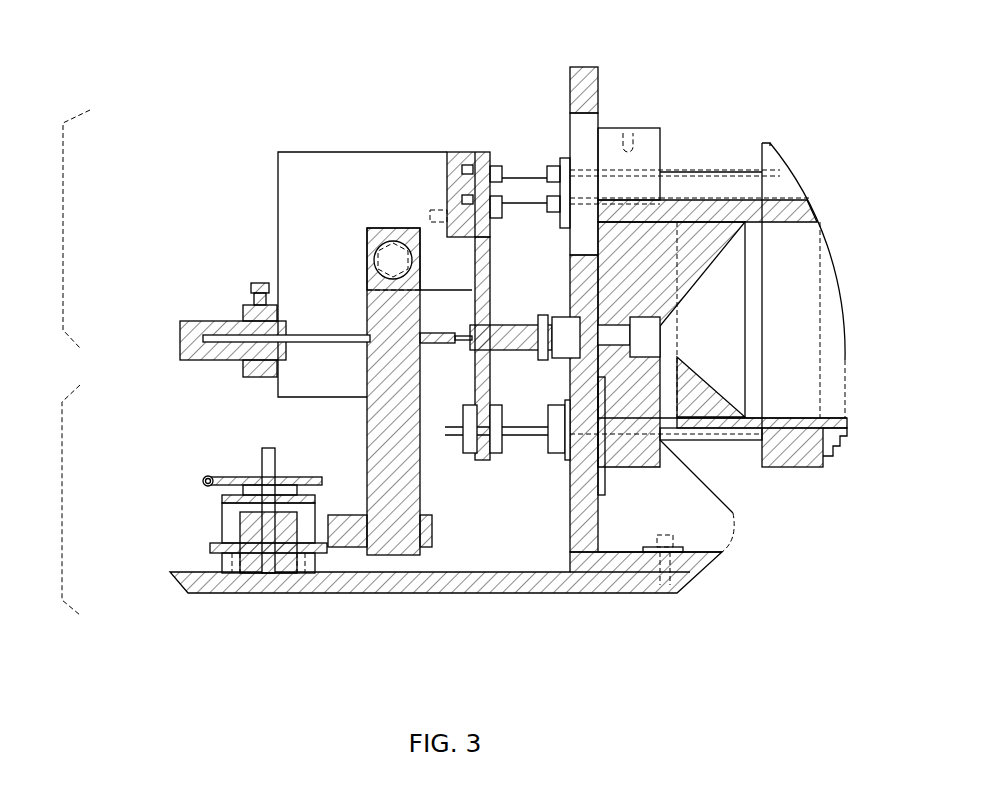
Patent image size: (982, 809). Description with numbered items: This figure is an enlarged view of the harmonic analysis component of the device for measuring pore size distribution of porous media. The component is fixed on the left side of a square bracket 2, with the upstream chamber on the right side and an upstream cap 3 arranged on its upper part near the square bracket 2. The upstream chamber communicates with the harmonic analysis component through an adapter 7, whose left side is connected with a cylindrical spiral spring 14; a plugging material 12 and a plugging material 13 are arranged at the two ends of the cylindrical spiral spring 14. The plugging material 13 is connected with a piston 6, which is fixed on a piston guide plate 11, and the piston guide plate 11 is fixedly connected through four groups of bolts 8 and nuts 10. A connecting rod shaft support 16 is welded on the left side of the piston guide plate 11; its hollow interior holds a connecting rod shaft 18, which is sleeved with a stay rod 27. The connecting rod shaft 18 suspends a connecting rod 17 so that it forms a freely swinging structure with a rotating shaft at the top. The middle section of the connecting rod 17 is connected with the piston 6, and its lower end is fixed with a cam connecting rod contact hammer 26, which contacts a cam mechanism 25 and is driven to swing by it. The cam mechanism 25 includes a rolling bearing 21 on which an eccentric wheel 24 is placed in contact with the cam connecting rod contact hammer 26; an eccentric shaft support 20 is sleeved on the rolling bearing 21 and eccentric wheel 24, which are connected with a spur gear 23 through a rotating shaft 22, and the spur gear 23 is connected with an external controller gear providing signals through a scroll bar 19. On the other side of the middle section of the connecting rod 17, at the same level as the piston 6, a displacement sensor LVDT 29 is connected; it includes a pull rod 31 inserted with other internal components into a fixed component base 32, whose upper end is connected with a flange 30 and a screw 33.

The square bracket 2 is at (606, 530).
The upstream cap 3 is at (640, 125).
The piston 6 is at (437, 327).
The adapter 7 is at (585, 310).
The bolts 8 is at (575, 552).
The nuts 10 is at (530, 446).
The piston guide plate 11 is at (485, 462).
The plugging material 12 is at (542, 310).
The plugging material 13 is at (467, 250).
The cylindrical spiral spring 14 is at (511, 318).
The connecting rod shaft support 16 is at (277, 170).
The connecting rod 17 is at (396, 557).
The connecting rod shaft 18 is at (394, 240).
The scroll bar 19 is at (200, 479).
The eccentric shaft support 20 is at (220, 505).
The rolling bearing 21 is at (232, 573).
The rotating shaft 22 is at (258, 462).
The spur gear 23 is at (238, 490).
The eccentric wheel 24 is at (210, 548).
The cam mechanism 25 is at (51, 500).
The cam connecting rod contact hammer 26 is at (345, 552).
The stay rod 27 is at (374, 232).
The displacement sensor LVDT 29 is at (56, 229).
The flange 30 is at (240, 312).
The pull rod 31 is at (205, 336).
The fixed component base 32 is at (183, 343).
The screw 33 is at (246, 288).